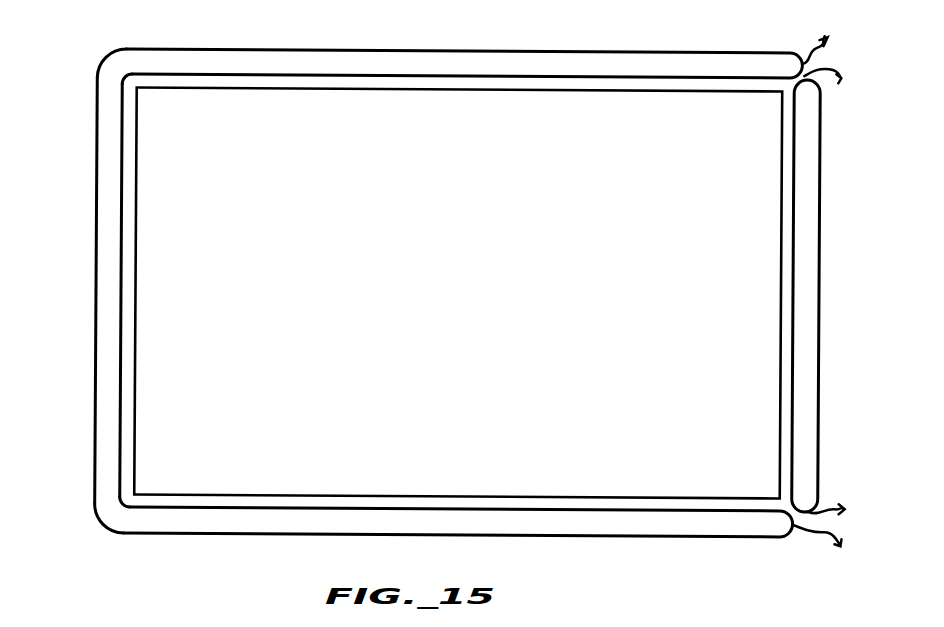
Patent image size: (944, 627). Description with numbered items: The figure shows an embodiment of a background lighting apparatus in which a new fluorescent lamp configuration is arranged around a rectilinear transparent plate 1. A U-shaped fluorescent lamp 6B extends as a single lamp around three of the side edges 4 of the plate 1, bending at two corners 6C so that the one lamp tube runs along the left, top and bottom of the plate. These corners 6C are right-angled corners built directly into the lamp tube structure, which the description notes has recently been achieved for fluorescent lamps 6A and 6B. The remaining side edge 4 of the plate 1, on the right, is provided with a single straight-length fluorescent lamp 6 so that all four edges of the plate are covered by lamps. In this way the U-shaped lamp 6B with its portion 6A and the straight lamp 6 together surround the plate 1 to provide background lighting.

The transparent plate 1 is at (163, 485).
The side edge 4 is at (428, 90).
The straight-length fluorescent lamp 6 is at (819, 177).
The fluorescent lamp 6A is at (96, 310).
The U-shaped fluorescent lamp 6B is at (567, 50).
The corner 6C is at (102, 65).